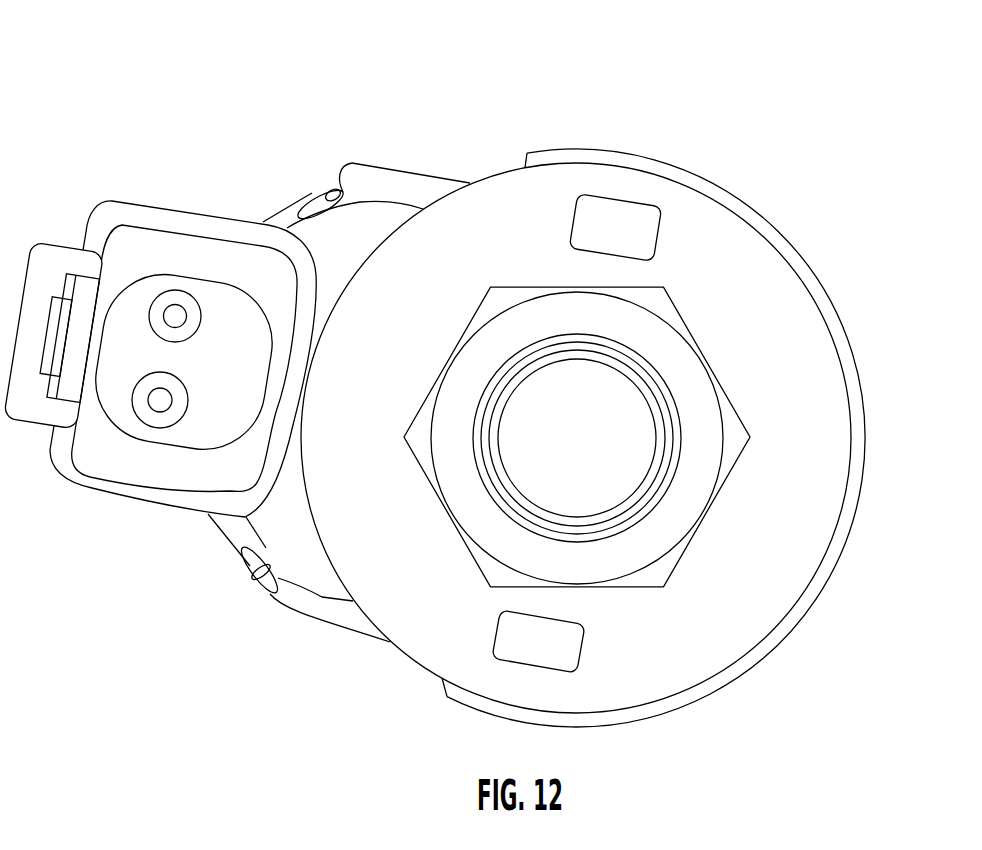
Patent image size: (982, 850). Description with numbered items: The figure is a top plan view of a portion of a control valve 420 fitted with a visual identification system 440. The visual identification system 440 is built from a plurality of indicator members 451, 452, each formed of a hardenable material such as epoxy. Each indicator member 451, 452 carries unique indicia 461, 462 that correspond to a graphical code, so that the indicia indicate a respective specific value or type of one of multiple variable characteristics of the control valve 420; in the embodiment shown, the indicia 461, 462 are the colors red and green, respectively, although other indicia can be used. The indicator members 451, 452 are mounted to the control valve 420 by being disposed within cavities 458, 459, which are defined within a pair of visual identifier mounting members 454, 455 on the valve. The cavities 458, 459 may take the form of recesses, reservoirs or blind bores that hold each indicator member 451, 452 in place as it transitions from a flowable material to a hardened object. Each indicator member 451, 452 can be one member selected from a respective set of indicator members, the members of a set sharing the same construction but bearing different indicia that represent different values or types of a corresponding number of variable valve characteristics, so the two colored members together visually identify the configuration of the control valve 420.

The control valve 420 is at (102, 56).
The visual identification system 440 is at (295, 108).
The indicator member 451 is at (341, 186).
The indicator member 452 is at (240, 560).
The visual identifier mounting member 454 is at (410, 182).
The visual identifier mounting member 455 is at (339, 618).
The cavity 458 is at (310, 200).
The cavity 459 is at (263, 598).
The indicia 461 is at (322, 198).
The indicia 462 is at (248, 566).